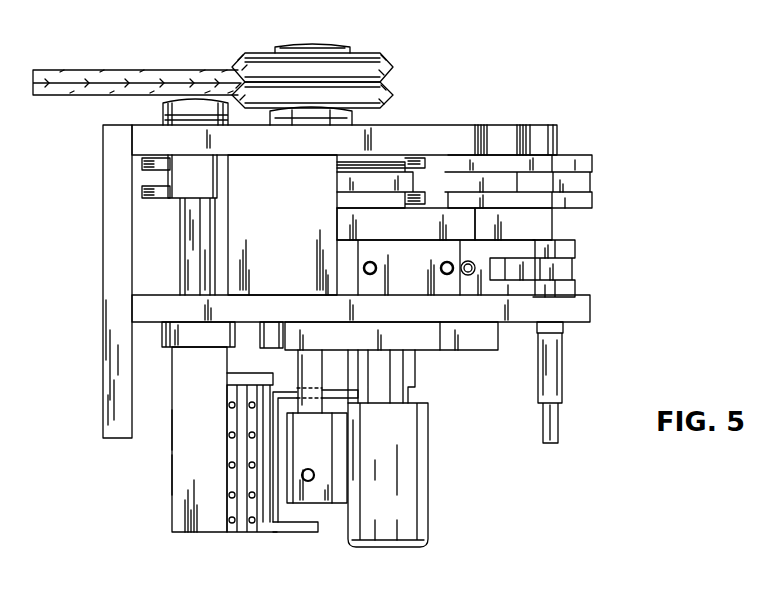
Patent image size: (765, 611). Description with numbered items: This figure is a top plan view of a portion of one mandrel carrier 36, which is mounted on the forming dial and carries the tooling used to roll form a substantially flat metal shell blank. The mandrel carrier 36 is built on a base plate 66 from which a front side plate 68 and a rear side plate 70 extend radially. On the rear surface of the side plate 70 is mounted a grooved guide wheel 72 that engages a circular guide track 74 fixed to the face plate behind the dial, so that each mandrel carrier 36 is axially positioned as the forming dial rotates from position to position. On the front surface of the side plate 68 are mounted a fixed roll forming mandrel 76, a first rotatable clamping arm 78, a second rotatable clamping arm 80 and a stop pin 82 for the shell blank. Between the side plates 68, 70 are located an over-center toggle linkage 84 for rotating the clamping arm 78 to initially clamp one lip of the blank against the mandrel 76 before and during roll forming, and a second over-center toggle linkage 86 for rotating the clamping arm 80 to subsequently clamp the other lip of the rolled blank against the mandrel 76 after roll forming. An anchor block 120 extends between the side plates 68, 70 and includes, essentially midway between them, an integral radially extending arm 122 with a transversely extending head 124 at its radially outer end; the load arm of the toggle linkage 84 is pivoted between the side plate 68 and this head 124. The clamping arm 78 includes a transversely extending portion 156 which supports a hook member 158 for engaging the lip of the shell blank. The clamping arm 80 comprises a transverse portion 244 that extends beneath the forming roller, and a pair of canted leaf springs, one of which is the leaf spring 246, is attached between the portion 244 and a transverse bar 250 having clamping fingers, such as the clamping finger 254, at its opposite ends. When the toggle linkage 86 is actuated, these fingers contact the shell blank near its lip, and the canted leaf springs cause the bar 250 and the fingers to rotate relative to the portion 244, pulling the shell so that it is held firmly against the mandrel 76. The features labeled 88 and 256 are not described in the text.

The mandrel carrier 36 is at (533, 477).
The base plate 66 is at (101, 232).
The front side plate 68 is at (582, 313).
The rear side plate 70 is at (426, 125).
The grooved guide wheel 72 is at (395, 82).
The circular guide track 74 is at (113, 68).
The roll forming mandrel 76 is at (420, 512).
The first rotatable clamping arm 78 is at (422, 345).
The second rotatable clamping arm 80 is at (185, 422).
The stop pin 82 is at (561, 371).
The over-center toggle linkage 84 is at (582, 275).
The over-center toggle linkage 86 is at (601, 182).
The guide surface 88 is at (172, 428).
The anchor block 120 is at (298, 207).
The radially extending arm 122 is at (417, 233).
The transversely extending head 124 is at (540, 228).
The transversely extending portion 156 is at (316, 378).
The hook member 158 is at (330, 460).
The transverse portion 244 is at (190, 463).
The canted leaf spring 246 is at (243, 516).
The transverse bar 250 is at (268, 520).
The clamping finger 254 is at (312, 532).
The pivot pin 256 is at (290, 390).